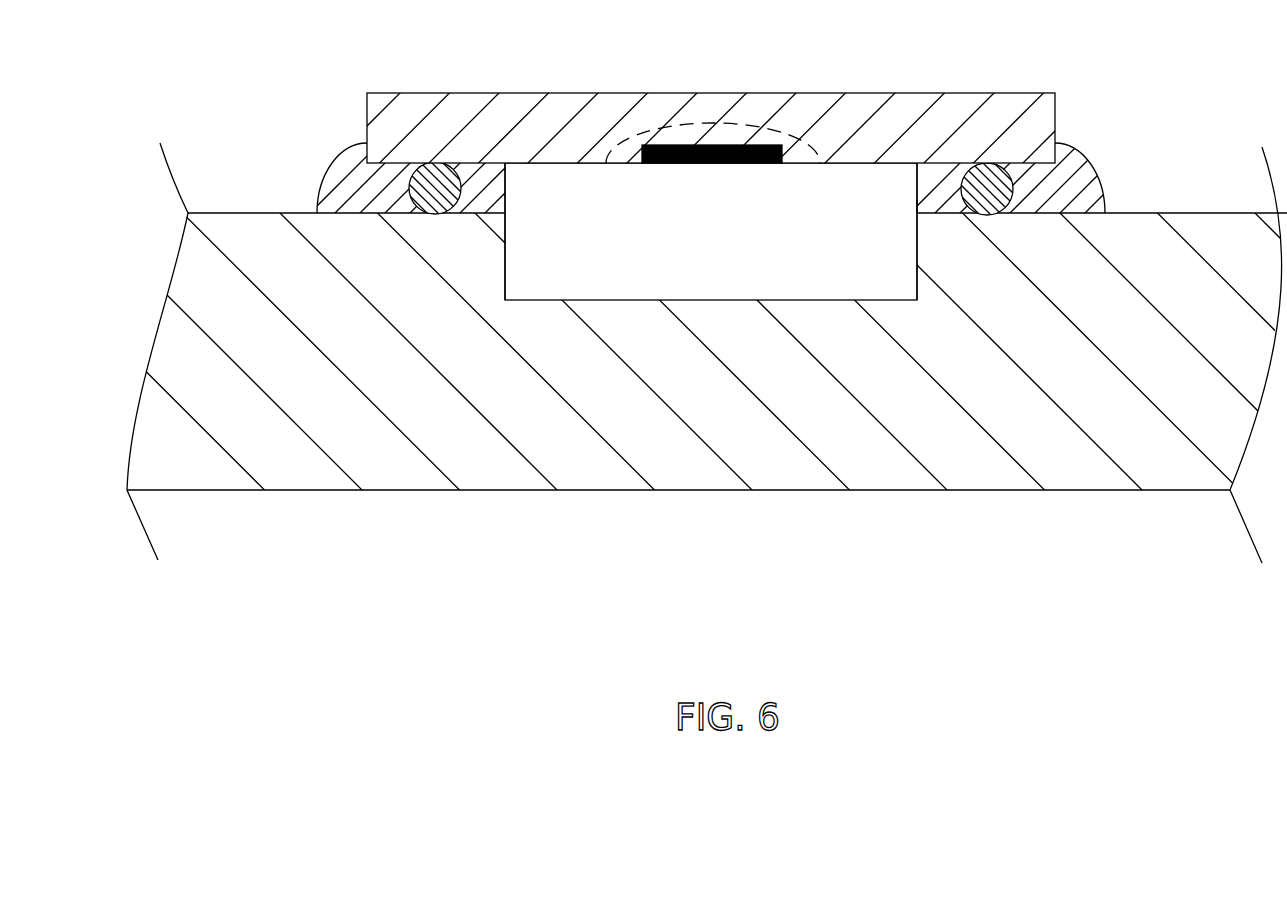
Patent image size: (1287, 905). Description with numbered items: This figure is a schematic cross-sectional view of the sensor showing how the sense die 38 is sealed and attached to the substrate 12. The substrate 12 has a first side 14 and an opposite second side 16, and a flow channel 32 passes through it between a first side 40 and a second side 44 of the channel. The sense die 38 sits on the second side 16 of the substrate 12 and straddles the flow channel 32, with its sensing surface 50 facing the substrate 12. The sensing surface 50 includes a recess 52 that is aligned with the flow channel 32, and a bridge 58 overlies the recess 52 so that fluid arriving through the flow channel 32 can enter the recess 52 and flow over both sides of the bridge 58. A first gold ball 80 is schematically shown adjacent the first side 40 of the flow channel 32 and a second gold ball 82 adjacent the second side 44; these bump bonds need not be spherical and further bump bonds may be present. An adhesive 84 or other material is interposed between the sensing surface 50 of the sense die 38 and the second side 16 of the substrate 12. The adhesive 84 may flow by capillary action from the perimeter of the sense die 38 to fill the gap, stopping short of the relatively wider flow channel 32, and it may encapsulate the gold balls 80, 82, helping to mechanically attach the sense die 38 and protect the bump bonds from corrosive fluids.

The substrate 12 is at (962, 458).
The first side 14 is at (678, 492).
The second side 16 is at (1172, 213).
The flow channel 32 is at (683, 267).
The sense die 38 is at (890, 113).
The first side 40 is at (507, 165).
The second side 44 is at (917, 200).
The sensing surface 50 is at (917, 165).
The recess 52 is at (725, 137).
The bridge 58 is at (708, 165).
The first gold ball 80 is at (436, 163).
The second gold ball 82 is at (987, 172).
The adhesive 84 is at (340, 182).